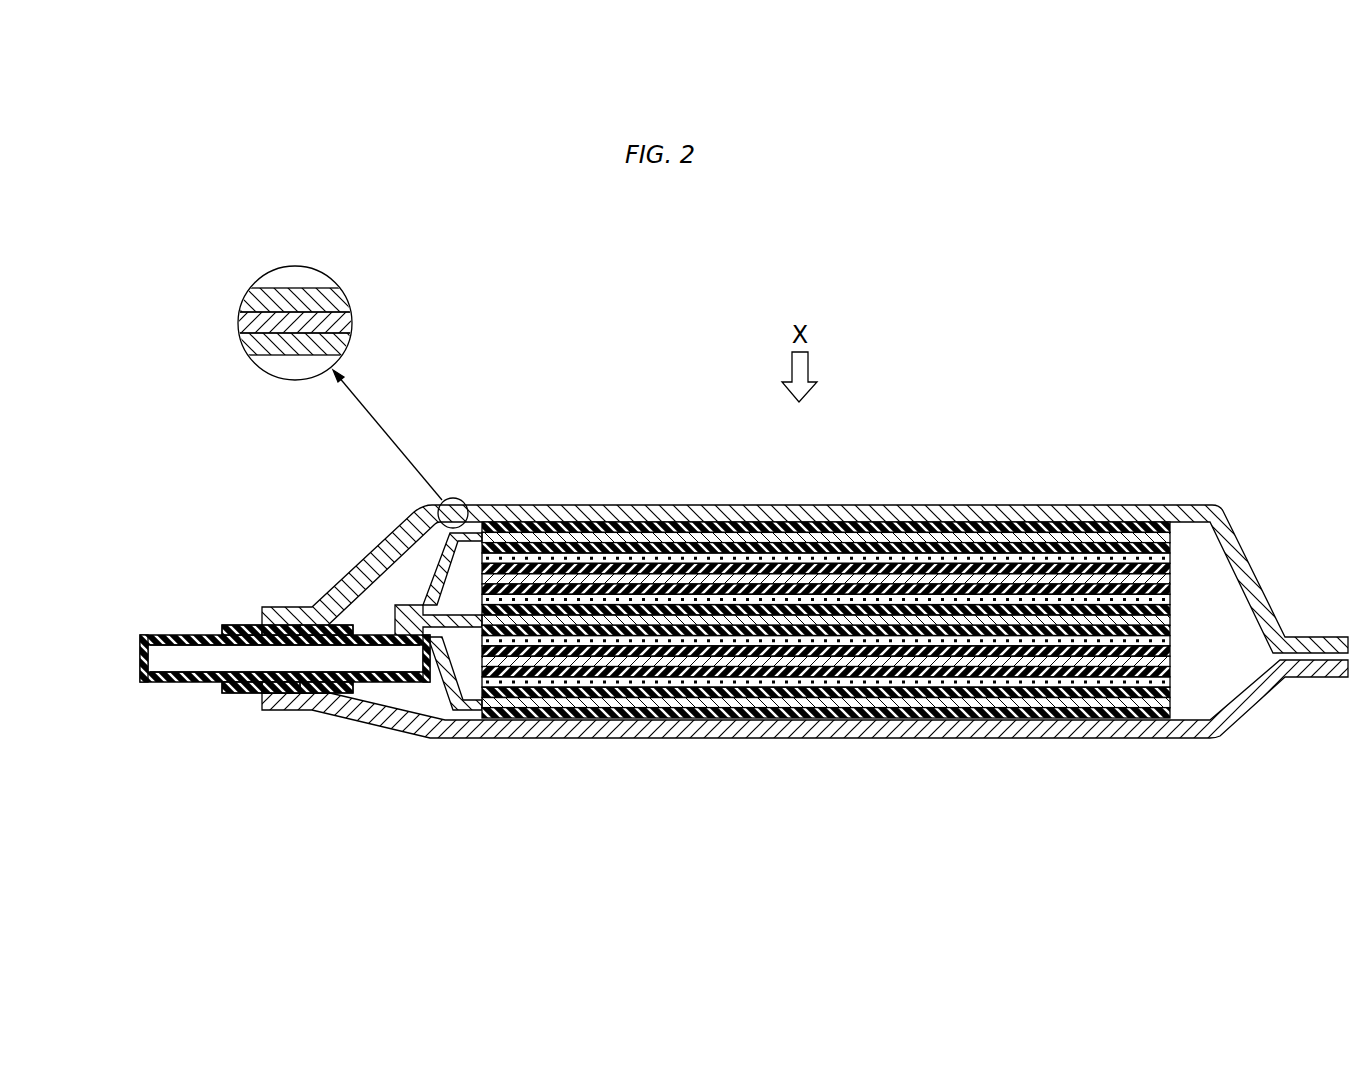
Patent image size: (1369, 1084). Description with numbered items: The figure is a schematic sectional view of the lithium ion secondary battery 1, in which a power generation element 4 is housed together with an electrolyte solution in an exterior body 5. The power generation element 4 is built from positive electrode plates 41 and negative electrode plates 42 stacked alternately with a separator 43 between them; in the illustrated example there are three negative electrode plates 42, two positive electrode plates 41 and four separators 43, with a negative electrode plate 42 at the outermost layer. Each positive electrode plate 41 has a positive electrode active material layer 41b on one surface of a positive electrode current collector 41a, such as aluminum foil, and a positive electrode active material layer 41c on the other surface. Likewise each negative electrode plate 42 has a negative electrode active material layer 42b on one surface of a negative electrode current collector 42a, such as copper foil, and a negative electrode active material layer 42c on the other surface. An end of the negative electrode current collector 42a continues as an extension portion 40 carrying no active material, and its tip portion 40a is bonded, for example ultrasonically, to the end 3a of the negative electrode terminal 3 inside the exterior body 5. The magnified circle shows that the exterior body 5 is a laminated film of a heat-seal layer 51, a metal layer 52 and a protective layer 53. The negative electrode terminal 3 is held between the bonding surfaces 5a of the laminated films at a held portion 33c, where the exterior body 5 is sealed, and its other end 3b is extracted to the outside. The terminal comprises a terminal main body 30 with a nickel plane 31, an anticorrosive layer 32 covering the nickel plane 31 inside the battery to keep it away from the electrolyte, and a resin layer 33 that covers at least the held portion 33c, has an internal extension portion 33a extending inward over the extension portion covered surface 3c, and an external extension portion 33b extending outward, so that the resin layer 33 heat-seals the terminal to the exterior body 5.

The lithium ion secondary battery 1 is at (1247, 397).
The negative electrode terminal 3 is at (142, 695).
The end of negative electrode terminal 3a is at (395, 665).
The other end of negative electrode terminal 3b is at (162, 650).
The extension portion covered surface 3c is at (330, 648).
The power generation element 4 is at (1225, 618).
The exterior body 5 is at (293, 282).
The bonding surfaces 5a is at (280, 627).
The terminal main body 30 is at (208, 662).
The nickel plane 31 is at (175, 680).
The anticorrosive layer 32 is at (142, 638).
The resin layer 33 is at (247, 625).
The internal extension portion 33a is at (330, 625).
The external extension portion 33b is at (222, 637).
The held portion 33c is at (262, 623).
The extension portion 40 is at (450, 700).
The tip portion 40a is at (413, 602).
The positive electrode plate 41 is at (458, 380).
The positive electrode current collector 41a is at (517, 535).
The positive electrode active material layer 41b is at (492, 522).
The positive electrode active material layer 41c is at (545, 546).
The negative electrode plate 42 is at (1197, 405).
The negative electrode current collector 42a is at (1090, 536).
The negative electrode active material layer 42b is at (1048, 526).
The negative electrode active material layer 42c is at (1133, 548).
The separator 43 is at (667, 597).
The heat-seal layer 51 is at (297, 343).
The metal layer 52 is at (340, 327).
The protective layer 53 is at (330, 300).